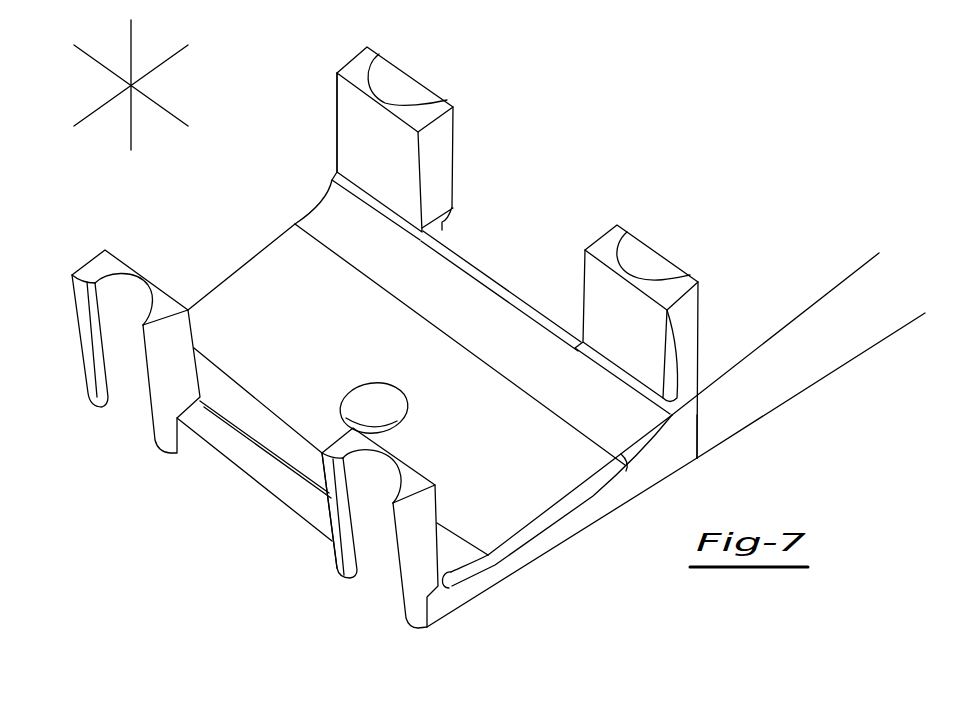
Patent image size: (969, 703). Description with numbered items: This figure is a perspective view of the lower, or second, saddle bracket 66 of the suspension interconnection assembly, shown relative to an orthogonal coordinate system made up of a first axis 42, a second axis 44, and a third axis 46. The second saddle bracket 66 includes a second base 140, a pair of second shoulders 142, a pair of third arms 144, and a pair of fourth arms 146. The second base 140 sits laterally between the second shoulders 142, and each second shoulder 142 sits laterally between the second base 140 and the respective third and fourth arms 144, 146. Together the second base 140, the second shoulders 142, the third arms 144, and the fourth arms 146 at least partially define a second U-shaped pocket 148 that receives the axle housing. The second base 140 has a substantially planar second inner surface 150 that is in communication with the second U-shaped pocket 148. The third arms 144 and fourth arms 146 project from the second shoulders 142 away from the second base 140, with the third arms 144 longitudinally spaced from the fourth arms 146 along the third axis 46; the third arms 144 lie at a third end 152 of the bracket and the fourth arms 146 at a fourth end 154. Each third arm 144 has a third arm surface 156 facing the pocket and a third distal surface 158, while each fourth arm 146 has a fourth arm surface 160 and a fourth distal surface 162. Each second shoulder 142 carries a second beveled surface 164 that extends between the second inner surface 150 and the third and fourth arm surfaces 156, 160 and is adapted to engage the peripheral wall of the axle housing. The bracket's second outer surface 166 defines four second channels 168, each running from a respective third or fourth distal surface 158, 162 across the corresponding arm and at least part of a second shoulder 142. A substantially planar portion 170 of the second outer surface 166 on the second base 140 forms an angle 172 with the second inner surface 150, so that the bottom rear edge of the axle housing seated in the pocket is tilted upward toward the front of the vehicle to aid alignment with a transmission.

The first axis 42 is at (128, 35).
The second axis 44 is at (168, 57).
The third axis 46 is at (93, 61).
The second saddle bracket 66 is at (633, 122).
The second base 140 is at (258, 296).
The second shoulders 142 is at (673, 453).
The third arms 144 is at (688, 318).
The fourth arms 146 is at (347, 106).
The second U-shaped pocket 148 is at (190, 243).
The second inner surface 150 is at (482, 458).
The third end 152 is at (619, 520).
The fourth end 154 is at (277, 234).
The third arm surface 156 is at (647, 342).
The third distal surface 158 is at (680, 282).
The fourth arm surface 160 is at (392, 170).
The fourth distal surface 162 is at (432, 112).
The second beveled surface 164 is at (492, 322).
The second outer surface 166 is at (275, 485).
The second channels 168 is at (398, 92).
The portion 170 is at (559, 553).
The angle 172 is at (849, 282).